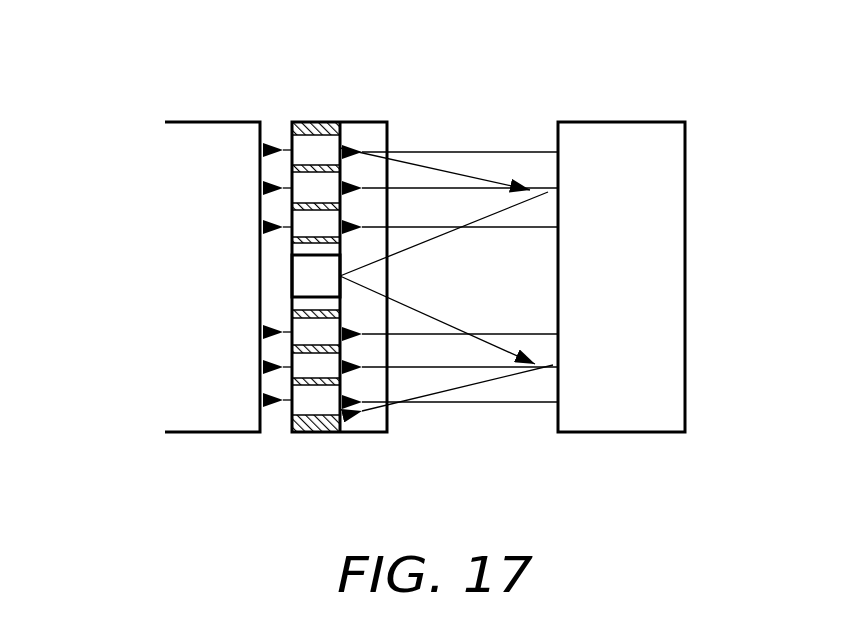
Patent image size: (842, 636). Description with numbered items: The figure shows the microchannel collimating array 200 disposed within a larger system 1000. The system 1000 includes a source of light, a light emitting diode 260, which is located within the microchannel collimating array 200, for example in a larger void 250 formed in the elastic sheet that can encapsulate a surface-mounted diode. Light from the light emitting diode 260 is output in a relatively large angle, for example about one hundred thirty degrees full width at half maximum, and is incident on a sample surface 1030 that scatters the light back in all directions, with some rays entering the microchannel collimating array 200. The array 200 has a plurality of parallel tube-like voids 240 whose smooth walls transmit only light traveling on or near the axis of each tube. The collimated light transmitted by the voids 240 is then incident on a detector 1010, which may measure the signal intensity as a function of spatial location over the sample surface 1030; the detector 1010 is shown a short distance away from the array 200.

The system 1000 is at (540, 100).
The detector 1010 is at (192, 392).
The sample surface 1030 is at (628, 445).
The microchannel collimating array 200 is at (275, 281).
The tube-like voids 240 is at (312, 188).
The void 250 is at (305, 252).
The light emitting diode 260 is at (310, 277).